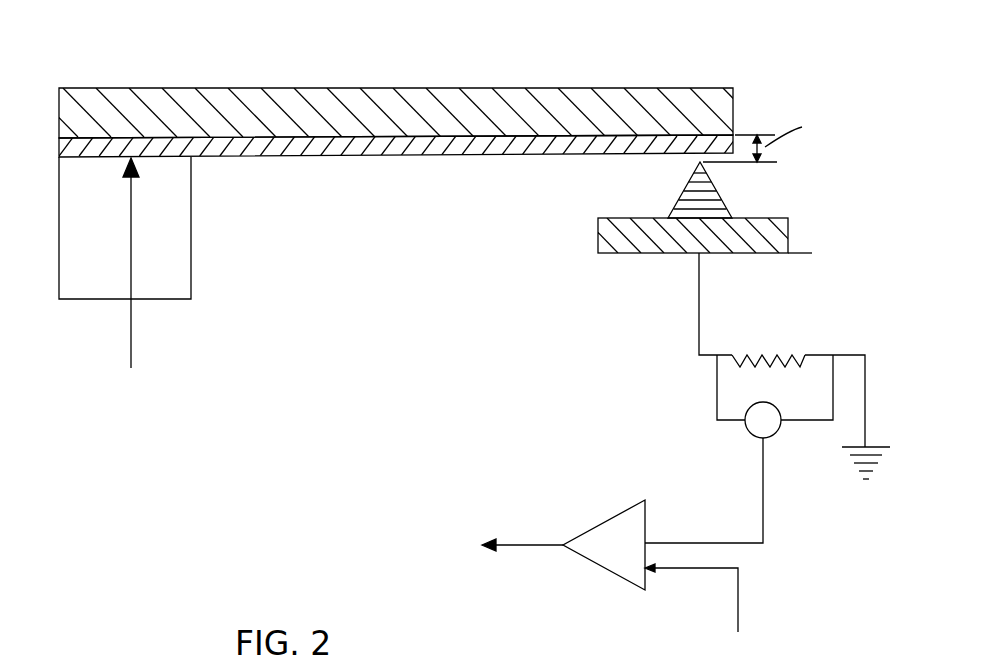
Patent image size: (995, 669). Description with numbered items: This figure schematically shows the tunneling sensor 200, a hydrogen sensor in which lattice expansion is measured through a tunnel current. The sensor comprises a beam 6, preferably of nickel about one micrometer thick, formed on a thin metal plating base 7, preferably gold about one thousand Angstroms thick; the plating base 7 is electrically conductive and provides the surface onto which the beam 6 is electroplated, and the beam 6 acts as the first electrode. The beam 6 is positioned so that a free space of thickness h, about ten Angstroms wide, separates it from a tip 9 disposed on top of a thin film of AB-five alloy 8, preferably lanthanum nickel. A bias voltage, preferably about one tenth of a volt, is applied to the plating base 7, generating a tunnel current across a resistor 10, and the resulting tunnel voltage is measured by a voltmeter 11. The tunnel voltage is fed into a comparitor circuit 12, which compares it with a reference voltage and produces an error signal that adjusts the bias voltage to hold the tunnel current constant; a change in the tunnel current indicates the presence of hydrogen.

The beam 6 is at (472, 92).
The metal plating base 7 is at (345, 150).
The thin film of AB5 8 is at (790, 223).
The tip 9 is at (710, 195).
The resistor 10 is at (792, 355).
The voltmeter 11 is at (777, 432).
The comparitor circuit 12 is at (613, 575).
The tunneling sensor 200 is at (190, 440).